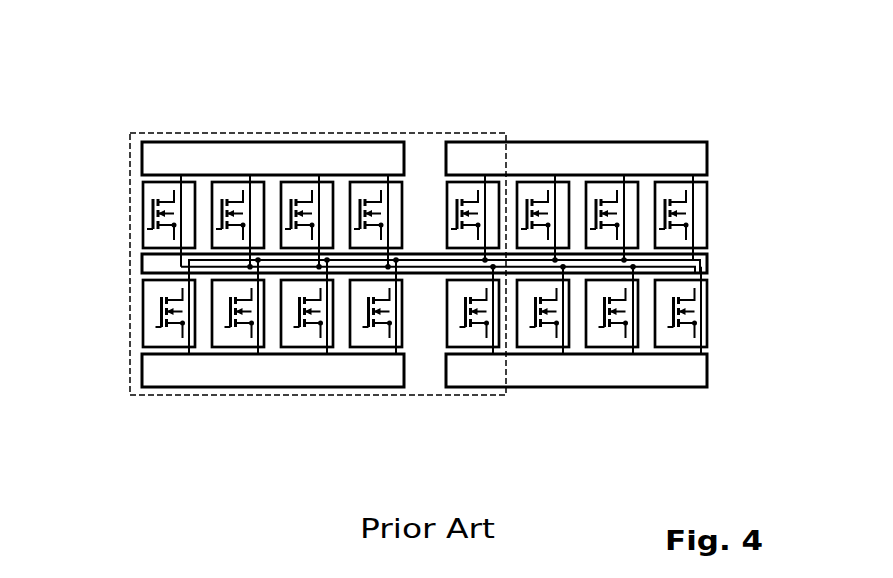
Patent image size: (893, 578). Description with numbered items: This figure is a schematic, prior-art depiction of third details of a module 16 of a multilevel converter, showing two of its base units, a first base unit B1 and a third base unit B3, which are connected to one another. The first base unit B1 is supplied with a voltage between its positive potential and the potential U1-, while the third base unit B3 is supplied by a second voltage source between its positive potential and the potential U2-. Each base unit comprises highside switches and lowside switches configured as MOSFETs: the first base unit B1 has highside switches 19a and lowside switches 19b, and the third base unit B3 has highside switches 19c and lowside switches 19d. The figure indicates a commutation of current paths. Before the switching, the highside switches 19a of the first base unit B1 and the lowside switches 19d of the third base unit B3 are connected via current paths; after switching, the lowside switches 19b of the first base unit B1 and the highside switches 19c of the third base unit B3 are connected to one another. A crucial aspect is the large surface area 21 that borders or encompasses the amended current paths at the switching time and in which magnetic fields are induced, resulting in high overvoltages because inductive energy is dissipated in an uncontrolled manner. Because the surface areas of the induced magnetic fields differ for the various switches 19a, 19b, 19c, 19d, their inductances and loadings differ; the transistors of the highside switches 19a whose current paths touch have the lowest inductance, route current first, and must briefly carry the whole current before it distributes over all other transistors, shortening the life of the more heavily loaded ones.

The module 16 is at (110, 136).
The highside switches 19a is at (143, 214).
The lowside switches 19b is at (143, 311).
The highside switches 19c is at (542, 178).
The lowside switches 19d is at (541, 347).
The surface area 21 is at (340, 395).
The first base unit B1 is at (262, 86).
The third base unit B3 is at (562, 86).
The potential U1− U1- is at (170, 375).
The potential U2− U2- is at (473, 375).